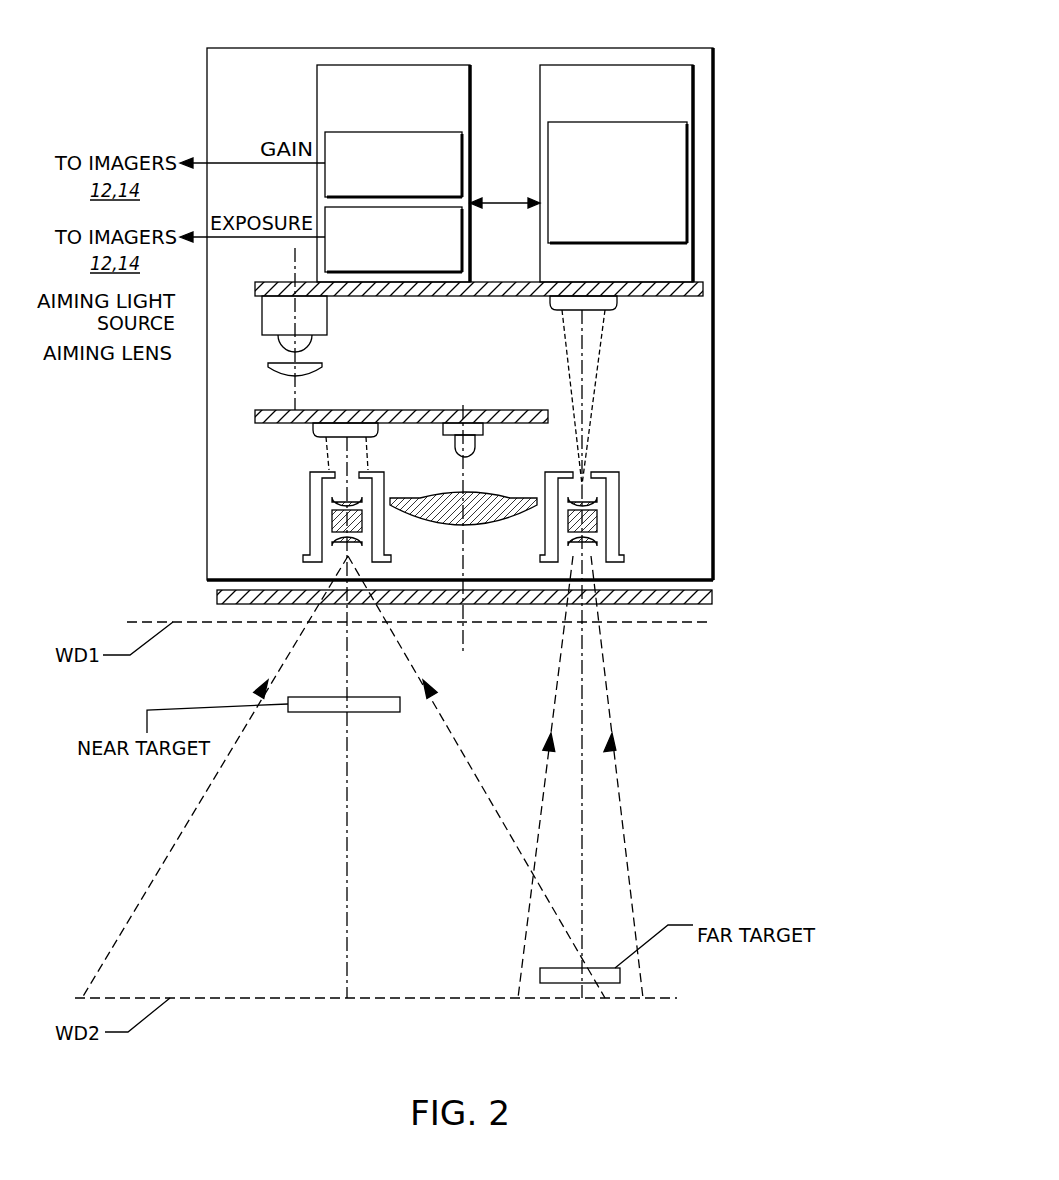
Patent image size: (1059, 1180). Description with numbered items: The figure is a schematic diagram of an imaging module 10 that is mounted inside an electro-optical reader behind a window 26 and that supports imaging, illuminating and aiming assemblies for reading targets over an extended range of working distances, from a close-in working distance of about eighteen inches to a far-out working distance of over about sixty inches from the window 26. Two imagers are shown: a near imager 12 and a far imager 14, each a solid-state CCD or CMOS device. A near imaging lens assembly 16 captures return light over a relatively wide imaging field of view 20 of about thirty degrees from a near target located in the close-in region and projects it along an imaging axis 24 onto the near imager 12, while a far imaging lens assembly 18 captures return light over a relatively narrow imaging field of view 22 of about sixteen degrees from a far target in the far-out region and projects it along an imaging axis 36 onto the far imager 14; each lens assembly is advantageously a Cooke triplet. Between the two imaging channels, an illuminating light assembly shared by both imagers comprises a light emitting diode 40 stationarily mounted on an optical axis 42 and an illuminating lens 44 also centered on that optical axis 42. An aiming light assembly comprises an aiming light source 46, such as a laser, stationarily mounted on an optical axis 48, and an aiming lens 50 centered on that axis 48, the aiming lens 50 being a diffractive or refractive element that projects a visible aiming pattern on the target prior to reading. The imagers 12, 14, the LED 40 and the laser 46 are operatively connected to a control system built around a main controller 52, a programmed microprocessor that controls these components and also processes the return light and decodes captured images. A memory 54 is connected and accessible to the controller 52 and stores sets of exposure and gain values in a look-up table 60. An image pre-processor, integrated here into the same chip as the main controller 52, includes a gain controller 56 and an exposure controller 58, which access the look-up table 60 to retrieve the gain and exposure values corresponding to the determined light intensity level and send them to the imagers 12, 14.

The imaging module 10 is at (742, 31).
The near imager 12 is at (317, 425).
The far imager 14 is at (630, 308).
The near imaging lens assembly 16 is at (310, 500).
The far imaging lens assembly 18 is at (597, 485).
The wide imaging field of view 20 is at (150, 884).
The narrow imaging field of view 22 is at (617, 782).
The imaging axis 24 is at (345, 797).
The window 26 is at (217, 597).
The imaging axis 36 is at (578, 693).
The light emitting diode 40 is at (455, 437).
The optical axis 42 is at (463, 642).
The illuminating lens 44 is at (516, 497).
The aiming light source 46 is at (262, 318).
The optical axis 48 is at (293, 266).
The aiming lens 50 is at (268, 370).
The main controller 52 is at (472, 113).
The memory 54 is at (695, 112).
The gain controller 56 is at (462, 170).
The exposure controller 58 is at (462, 243).
The look-up table 60 is at (690, 182).